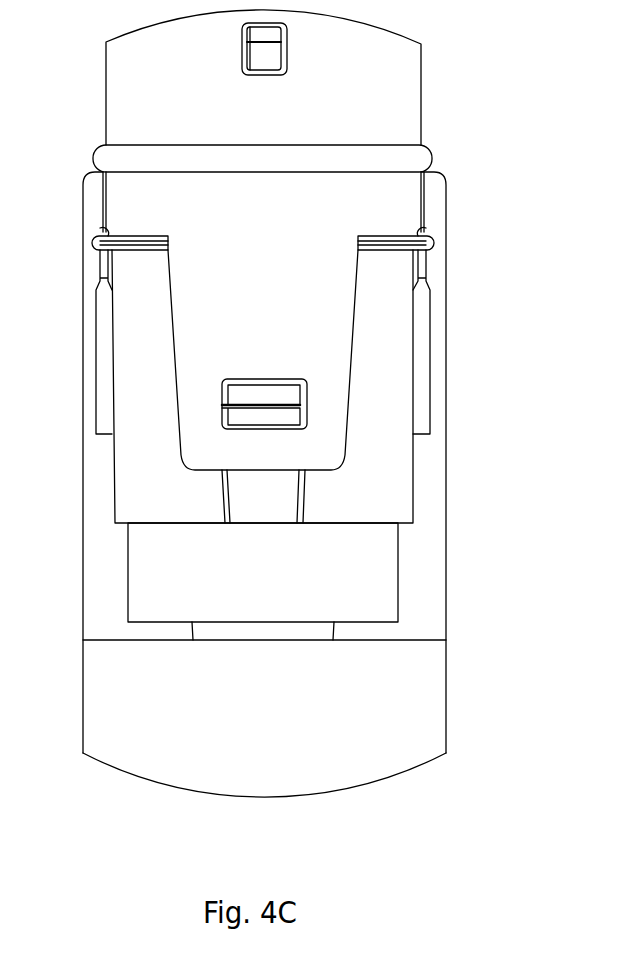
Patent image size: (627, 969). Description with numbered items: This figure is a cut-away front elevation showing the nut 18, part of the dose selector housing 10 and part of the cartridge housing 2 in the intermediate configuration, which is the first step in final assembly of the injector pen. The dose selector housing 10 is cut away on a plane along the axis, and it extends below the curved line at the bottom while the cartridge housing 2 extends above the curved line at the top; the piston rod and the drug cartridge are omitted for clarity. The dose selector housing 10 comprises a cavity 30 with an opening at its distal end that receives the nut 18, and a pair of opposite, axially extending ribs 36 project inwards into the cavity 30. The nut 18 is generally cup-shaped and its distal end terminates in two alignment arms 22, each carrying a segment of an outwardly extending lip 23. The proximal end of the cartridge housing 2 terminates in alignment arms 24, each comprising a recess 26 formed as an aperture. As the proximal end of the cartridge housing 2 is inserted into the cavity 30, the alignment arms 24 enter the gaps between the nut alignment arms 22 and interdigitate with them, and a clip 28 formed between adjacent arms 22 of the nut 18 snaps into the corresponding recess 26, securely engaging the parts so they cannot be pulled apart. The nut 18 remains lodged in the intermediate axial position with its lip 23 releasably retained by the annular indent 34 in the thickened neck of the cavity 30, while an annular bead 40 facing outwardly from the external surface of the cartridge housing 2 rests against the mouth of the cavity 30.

The cartridge housing 2 is at (399, 109).
The annular bead 40 is at (386, 160).
The alignment arms 24 is at (252, 282).
The lip 23 is at (380, 235).
The annular indent 34 is at (433, 233).
The alignment arms 22 is at (399, 286).
The clip 28 is at (275, 394).
The recess 26 is at (306, 409).
The nut 18 is at (414, 410).
The cavity 30 is at (284, 565).
The axial ribs 36 is at (406, 557).
The dose selector housing 10 is at (376, 680).